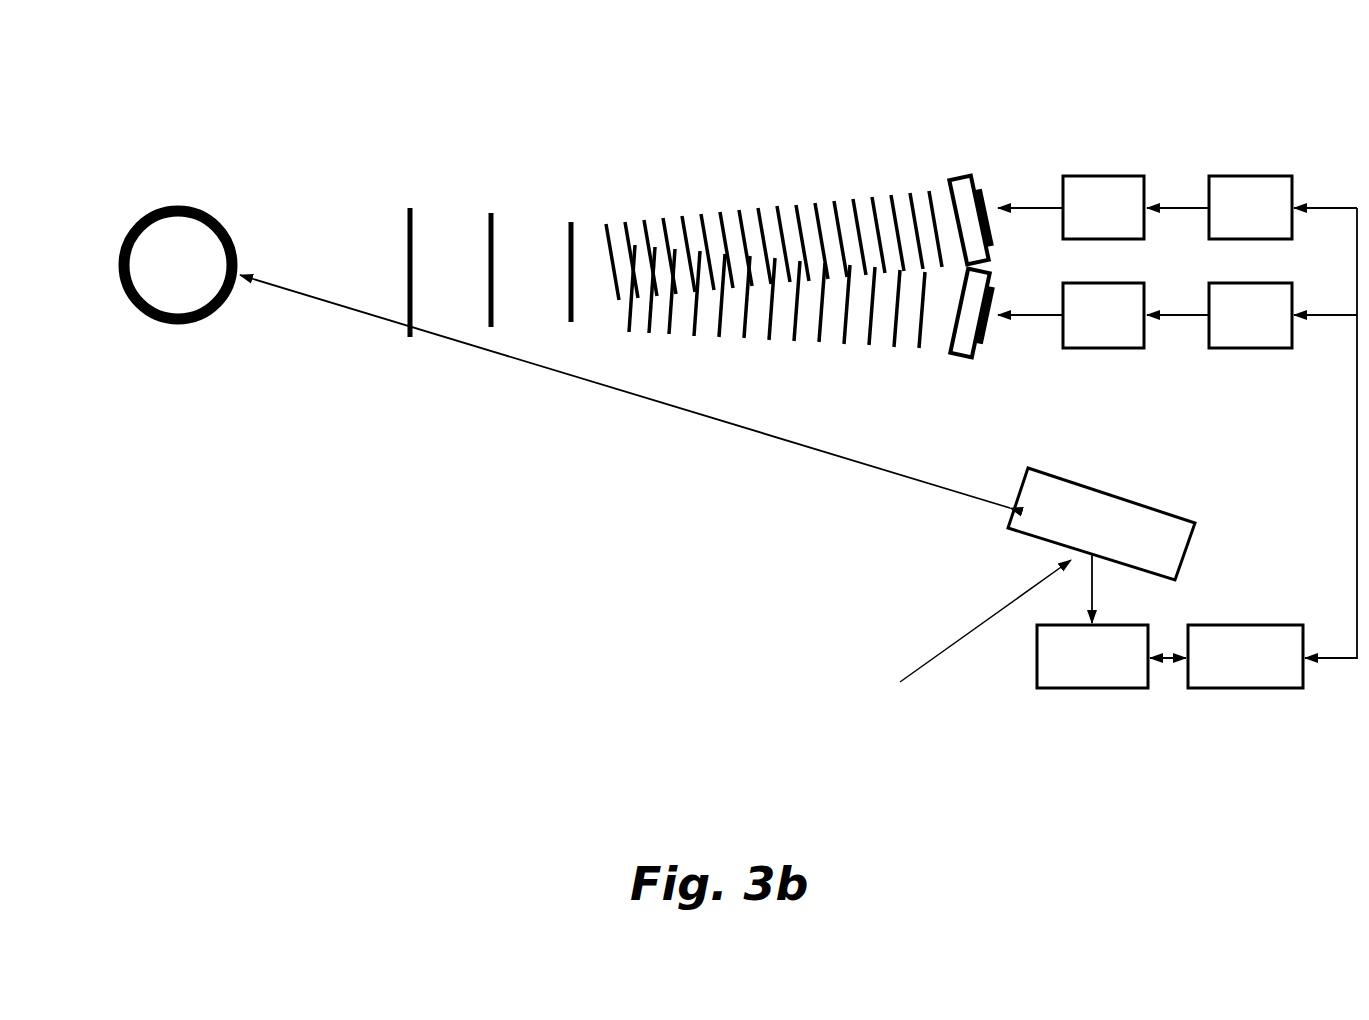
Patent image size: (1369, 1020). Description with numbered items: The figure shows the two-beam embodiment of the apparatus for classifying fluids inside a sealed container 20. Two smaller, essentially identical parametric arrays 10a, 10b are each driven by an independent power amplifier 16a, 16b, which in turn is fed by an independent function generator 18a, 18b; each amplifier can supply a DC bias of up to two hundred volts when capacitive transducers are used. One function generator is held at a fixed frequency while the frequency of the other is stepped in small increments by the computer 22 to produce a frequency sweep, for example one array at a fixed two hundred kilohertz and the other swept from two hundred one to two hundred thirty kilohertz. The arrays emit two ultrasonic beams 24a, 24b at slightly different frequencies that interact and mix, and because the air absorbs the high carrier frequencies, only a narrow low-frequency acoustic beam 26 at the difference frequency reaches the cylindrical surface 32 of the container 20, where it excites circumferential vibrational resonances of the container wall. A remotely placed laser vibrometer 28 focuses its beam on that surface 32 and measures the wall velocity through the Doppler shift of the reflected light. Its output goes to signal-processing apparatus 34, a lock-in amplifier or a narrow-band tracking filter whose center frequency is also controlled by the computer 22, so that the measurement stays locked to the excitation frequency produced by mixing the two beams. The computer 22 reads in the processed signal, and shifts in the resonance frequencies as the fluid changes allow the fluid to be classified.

The container 20 is at (173, 218).
The cylindrical surface 32 is at (240, 272).
The acoustic beam 26 is at (500, 253).
The first ultrasonic beam 24a is at (745, 200).
The second ultrasonic beam 24b is at (775, 343).
The first parametric array 10a is at (958, 178).
The second parametric array 10b is at (957, 356).
The first power amplifier 16a is at (1103, 188).
The second power amplifier 16b is at (1103, 336).
The first function generator 18a is at (1283, 188).
The second function generator 18b is at (1283, 336).
The laser vibrometer 28 is at (970, 580).
The signal-processing apparatus 34 is at (1111, 701).
The computer 22 is at (1272, 474).